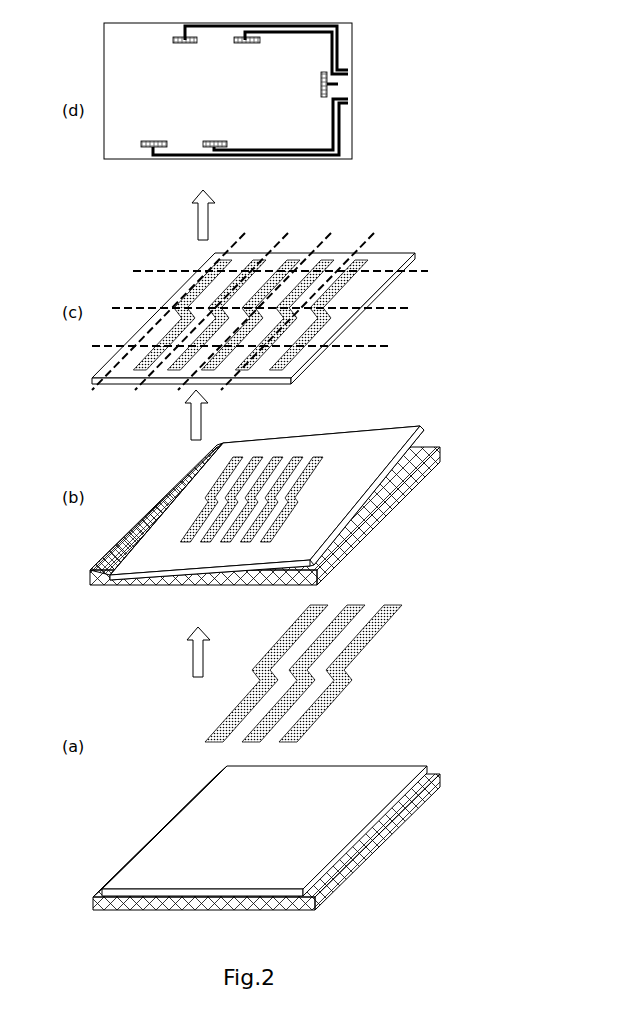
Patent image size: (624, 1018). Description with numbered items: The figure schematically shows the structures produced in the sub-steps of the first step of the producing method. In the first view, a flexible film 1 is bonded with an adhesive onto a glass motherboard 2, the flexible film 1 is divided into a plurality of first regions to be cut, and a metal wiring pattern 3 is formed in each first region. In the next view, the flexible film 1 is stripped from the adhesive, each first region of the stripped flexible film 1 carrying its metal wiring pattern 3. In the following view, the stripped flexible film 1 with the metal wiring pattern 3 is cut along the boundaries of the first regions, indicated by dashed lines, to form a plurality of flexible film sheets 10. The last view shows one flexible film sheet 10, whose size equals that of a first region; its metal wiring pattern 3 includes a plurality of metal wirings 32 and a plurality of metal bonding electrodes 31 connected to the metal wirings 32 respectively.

The flexible film 1 is at (298, 363).
The glass motherboard 2 is at (367, 515).
The metal wiring pattern 3 is at (320, 325).
The flexible film sheet 10 is at (125, 143).
The metal bonding electrode 31 is at (148, 146).
The metal wiring 32 is at (286, 157).